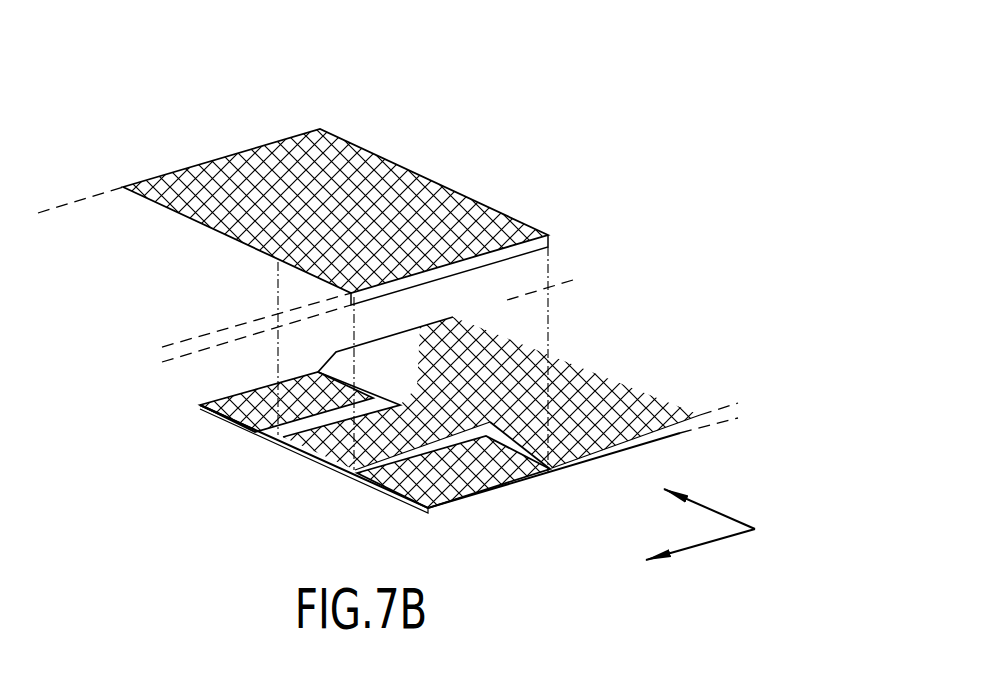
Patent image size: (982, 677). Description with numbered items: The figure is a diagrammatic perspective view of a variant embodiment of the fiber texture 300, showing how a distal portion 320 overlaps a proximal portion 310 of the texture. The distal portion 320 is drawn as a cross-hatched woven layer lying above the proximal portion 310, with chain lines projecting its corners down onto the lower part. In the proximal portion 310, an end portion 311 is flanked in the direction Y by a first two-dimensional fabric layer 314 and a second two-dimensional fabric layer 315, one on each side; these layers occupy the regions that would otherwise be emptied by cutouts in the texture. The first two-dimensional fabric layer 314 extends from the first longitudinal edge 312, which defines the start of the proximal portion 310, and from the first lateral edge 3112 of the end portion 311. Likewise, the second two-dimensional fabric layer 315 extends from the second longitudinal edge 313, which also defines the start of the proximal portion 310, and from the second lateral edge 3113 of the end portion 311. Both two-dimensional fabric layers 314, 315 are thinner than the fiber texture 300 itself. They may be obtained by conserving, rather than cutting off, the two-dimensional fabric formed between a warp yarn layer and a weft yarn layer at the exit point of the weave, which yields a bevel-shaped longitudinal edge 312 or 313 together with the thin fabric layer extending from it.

The fiber texture 300 is at (644, 160).
The proximal portion 310 is at (516, 490).
The end portion 311 is at (318, 430).
The first longitudinal edge 312 is at (559, 474).
The second longitudinal edge 313 is at (336, 364).
The first two-dimensional fabric layer 314 is at (464, 506).
The second two-dimensional fabric layer 315 is at (243, 421).
The distal portion 320 is at (283, 126).
The first lateral edge 3112 is at (373, 483).
The second lateral edge 3113 is at (265, 387).